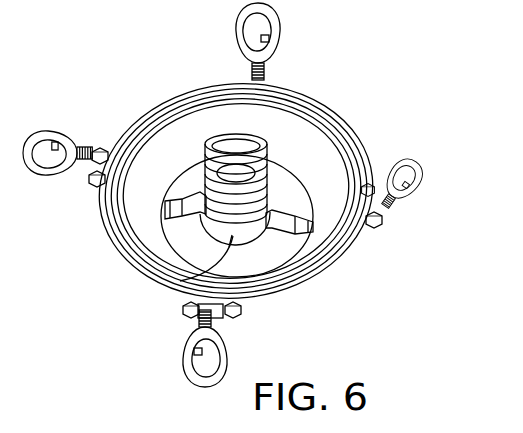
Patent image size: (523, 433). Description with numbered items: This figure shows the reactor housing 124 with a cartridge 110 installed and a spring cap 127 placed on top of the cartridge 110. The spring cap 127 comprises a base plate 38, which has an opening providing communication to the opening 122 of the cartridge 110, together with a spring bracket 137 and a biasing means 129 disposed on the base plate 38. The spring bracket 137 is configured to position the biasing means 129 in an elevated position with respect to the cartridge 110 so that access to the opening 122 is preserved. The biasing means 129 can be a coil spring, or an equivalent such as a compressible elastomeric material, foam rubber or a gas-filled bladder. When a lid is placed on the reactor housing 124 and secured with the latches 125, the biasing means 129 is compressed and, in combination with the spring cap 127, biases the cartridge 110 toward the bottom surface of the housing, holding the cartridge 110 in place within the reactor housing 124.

The cartridge 110 is at (187, 172).
The opening 122 is at (157, 277).
The reactor housing 124 is at (287, 107).
The latches 125 is at (281, 23).
The spring cap 127 is at (278, 243).
The biasing means 129 is at (232, 234).
The spring bracket 137 is at (290, 215).
The base plate 38 is at (258, 261).